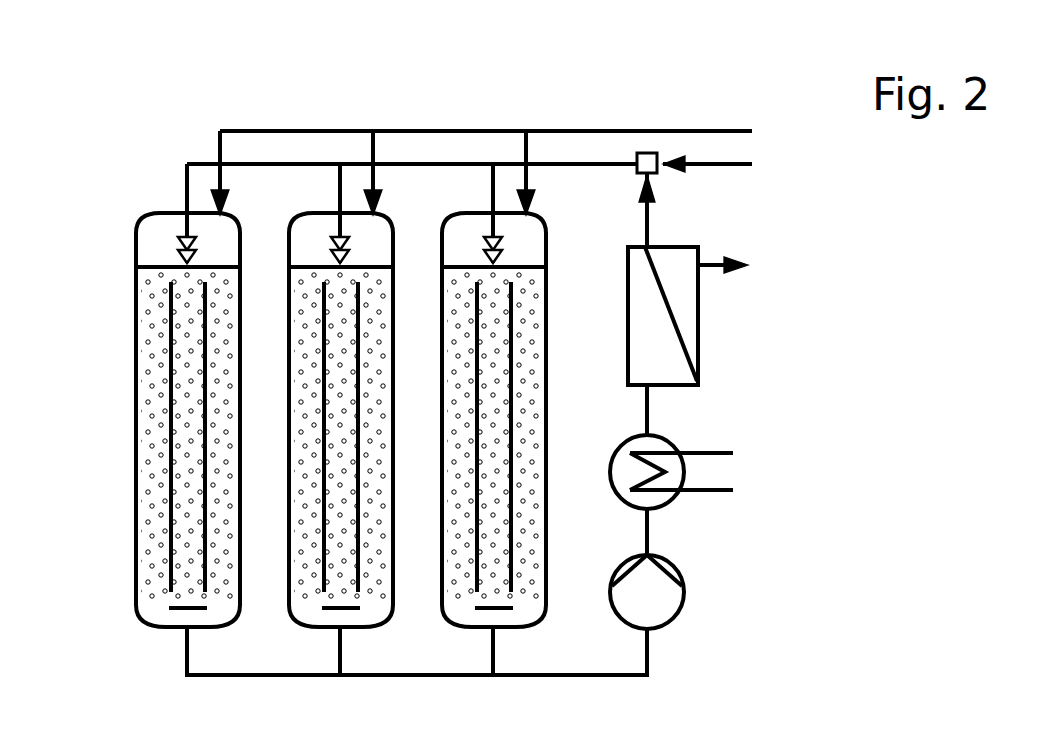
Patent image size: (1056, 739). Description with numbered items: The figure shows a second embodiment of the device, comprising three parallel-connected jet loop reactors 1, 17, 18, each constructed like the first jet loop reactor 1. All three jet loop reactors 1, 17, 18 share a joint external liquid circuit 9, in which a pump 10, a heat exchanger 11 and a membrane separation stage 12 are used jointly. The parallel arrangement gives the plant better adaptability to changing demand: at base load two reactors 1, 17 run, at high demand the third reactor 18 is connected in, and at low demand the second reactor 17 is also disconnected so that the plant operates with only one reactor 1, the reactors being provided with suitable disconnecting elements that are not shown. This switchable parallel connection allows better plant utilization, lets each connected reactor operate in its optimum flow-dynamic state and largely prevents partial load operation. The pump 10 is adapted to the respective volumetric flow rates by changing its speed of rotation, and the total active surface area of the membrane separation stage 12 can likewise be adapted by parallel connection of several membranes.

The jet loop reactor 1 is at (457, 195).
The jet loop reactor 17 is at (310, 197).
The jet loop reactor 18 is at (158, 195).
The joint external liquid circuit 9 is at (594, 423).
The pump 10 is at (695, 607).
The heat exchanger 11 is at (735, 470).
The membrane separation stage 12 is at (708, 318).